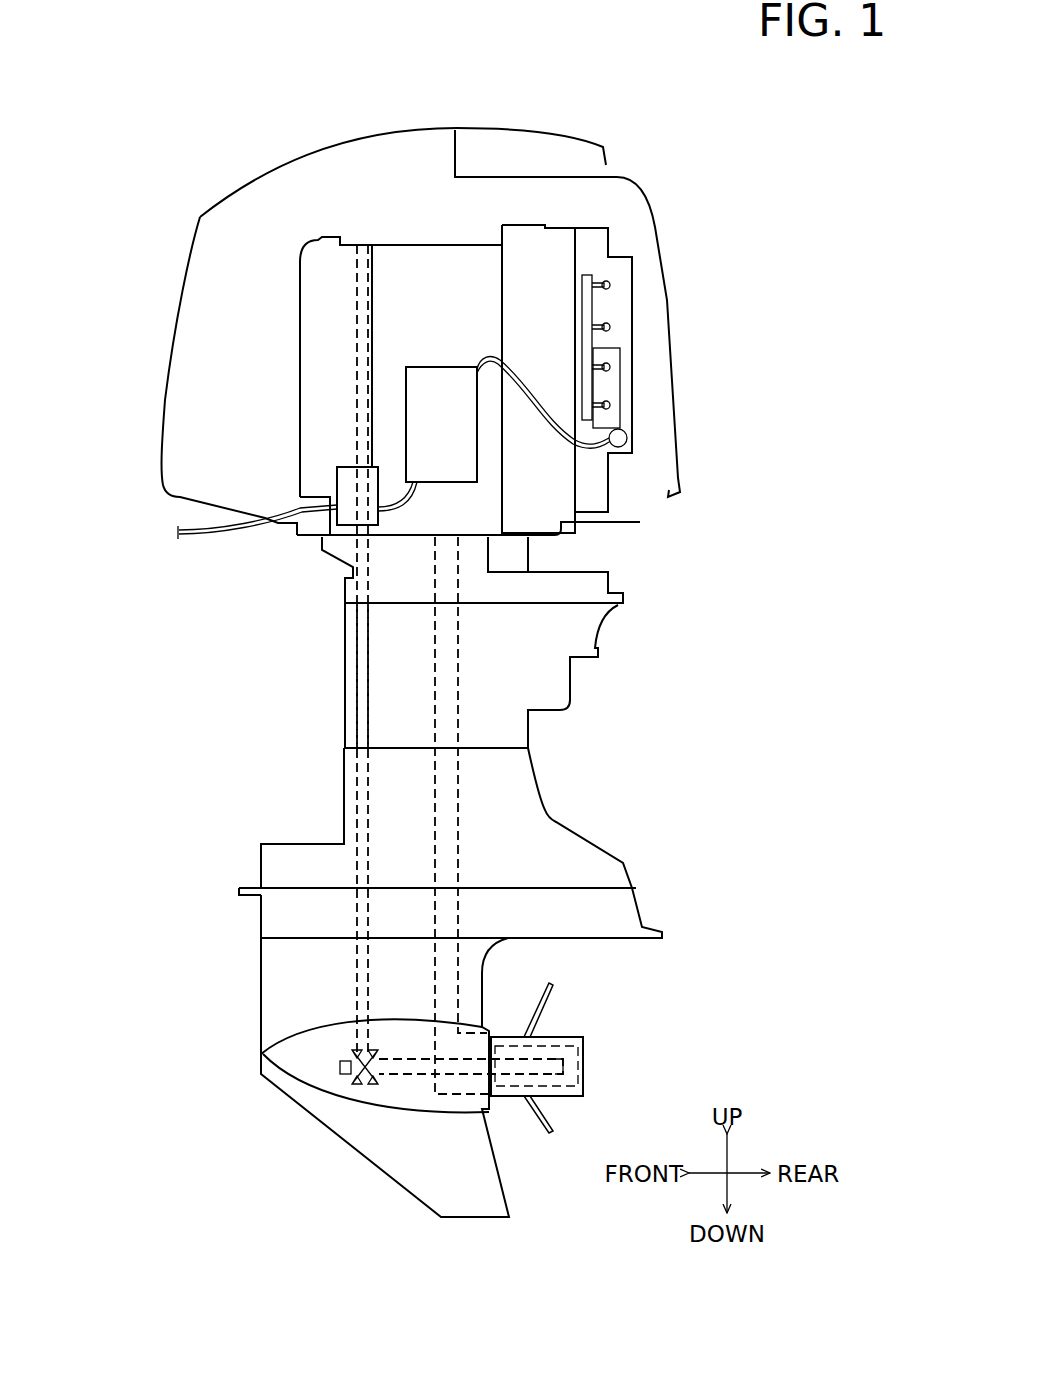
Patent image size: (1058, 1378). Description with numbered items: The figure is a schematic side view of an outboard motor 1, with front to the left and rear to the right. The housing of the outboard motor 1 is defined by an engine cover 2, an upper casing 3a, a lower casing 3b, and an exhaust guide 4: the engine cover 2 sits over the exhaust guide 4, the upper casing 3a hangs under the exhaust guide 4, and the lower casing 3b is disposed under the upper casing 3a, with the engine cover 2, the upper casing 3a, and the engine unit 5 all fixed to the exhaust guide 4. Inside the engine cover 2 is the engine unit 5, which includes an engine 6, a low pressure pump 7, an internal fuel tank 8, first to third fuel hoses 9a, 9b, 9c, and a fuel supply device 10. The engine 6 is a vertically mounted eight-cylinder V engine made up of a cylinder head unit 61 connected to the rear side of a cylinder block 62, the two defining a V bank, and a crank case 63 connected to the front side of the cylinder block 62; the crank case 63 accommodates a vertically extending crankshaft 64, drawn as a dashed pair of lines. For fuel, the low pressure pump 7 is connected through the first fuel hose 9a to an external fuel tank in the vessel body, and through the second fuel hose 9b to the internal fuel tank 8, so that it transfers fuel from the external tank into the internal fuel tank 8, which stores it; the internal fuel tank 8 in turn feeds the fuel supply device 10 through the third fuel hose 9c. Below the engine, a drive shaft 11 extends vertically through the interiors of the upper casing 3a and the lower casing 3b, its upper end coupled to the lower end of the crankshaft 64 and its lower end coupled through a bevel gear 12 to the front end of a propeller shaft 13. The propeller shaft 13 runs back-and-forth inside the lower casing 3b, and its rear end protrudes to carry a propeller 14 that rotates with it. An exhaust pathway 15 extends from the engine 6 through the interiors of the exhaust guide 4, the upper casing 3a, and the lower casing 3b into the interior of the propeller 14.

The outboard motor 1 is at (226, 133).
The engine cover 2 is at (227, 197).
The upper casing 3a is at (345, 713).
The lower casing 3b is at (259, 862).
The exhaust guide 4 is at (353, 577).
The engine unit 5 is at (323, 231).
The engine 6 is at (398, 37).
The cylinder head unit 61 is at (585, 228).
The cylinder block 62 is at (413, 245).
The crank case 63 is at (350, 243).
The crankshaft 64 is at (350, 435).
The low pressure pump 7 is at (337, 482).
The internal fuel tank 8 is at (406, 403).
The first fuel hose 9a is at (192, 540).
The second fuel hose 9b is at (388, 508).
The third fuel hose 9c is at (530, 432).
The fuel supply device 10 is at (620, 306).
The drive shaft 11 is at (357, 660).
The bevel gear 12 is at (353, 1072).
The propeller shaft 13 is at (414, 1078).
The propeller 14 is at (610, 1070).
The exhaust pathway 15 is at (458, 765).